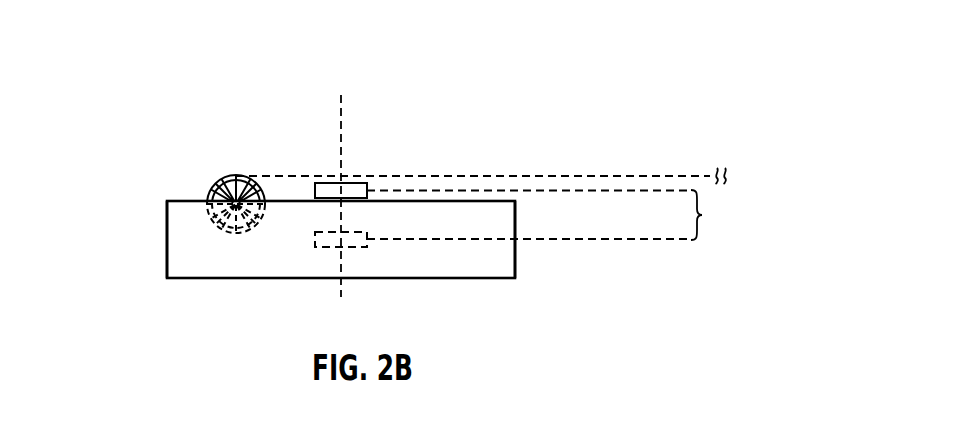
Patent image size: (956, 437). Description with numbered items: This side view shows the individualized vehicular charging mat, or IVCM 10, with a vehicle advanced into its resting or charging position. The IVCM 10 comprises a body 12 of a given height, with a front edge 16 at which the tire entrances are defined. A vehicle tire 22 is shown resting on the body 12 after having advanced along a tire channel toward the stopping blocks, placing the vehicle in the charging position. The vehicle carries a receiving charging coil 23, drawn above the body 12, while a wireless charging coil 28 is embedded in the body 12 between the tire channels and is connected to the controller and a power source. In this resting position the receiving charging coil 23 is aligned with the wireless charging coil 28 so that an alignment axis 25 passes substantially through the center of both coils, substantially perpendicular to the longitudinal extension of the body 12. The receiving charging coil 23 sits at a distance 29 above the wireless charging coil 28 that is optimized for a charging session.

The IVCM 10 is at (143, 250).
The body 12 is at (472, 257).
The front edge 16 is at (516, 263).
The tires 22 is at (236, 176).
The receiving charging coil 23 is at (325, 183).
The alignment axis 25 is at (342, 130).
The wireless charging coil 28 is at (332, 247).
The distance 29 is at (711, 215).